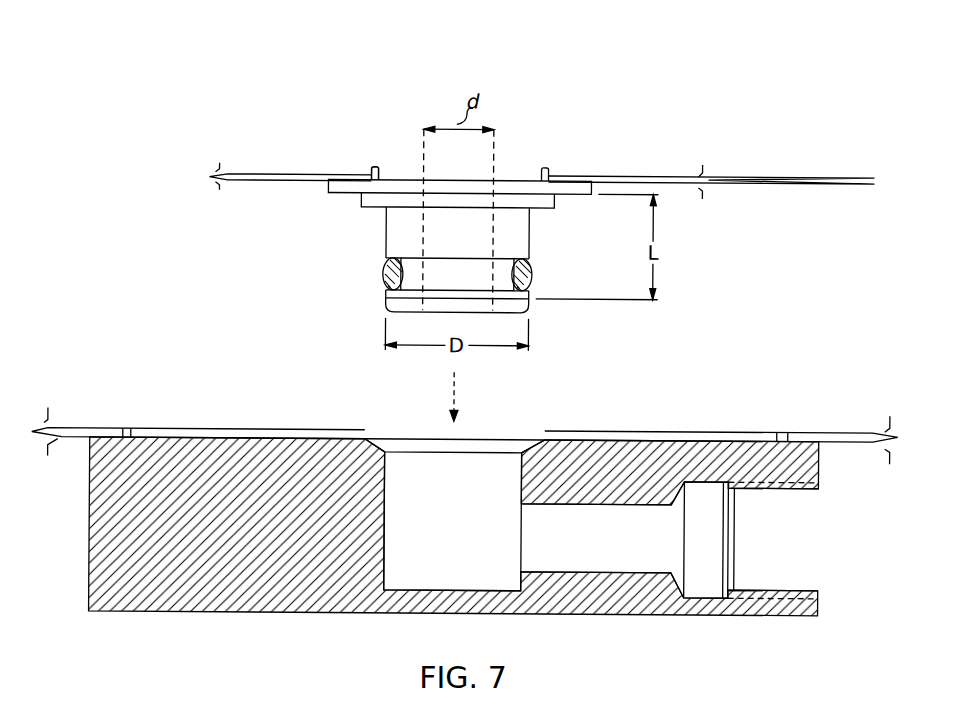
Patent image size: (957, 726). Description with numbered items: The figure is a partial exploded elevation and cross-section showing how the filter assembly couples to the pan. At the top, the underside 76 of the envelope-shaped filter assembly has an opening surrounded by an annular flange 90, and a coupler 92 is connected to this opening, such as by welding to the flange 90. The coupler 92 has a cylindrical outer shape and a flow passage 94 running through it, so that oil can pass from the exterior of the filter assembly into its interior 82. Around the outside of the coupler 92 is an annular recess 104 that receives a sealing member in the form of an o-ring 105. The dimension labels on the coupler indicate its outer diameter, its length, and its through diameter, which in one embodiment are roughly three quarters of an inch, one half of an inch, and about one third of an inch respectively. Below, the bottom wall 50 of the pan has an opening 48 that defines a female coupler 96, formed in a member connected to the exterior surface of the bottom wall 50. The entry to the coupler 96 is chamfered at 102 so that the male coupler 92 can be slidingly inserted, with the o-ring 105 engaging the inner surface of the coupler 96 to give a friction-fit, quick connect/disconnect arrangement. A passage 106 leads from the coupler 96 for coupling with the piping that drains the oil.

The interior 82 is at (333, 153).
The underside 76 is at (252, 181).
The annular flange 90 is at (332, 194).
The coupler 92 is at (384, 303).
The flow passage 94 is at (492, 232).
The annular recess 104 is at (395, 256).
The o-ring 105 is at (533, 271).
The opening 48 is at (366, 437).
The bottom wall 50 is at (840, 432).
The chamfer 102 is at (544, 436).
The coupler 96 is at (385, 474).
The passage 106 is at (672, 544).